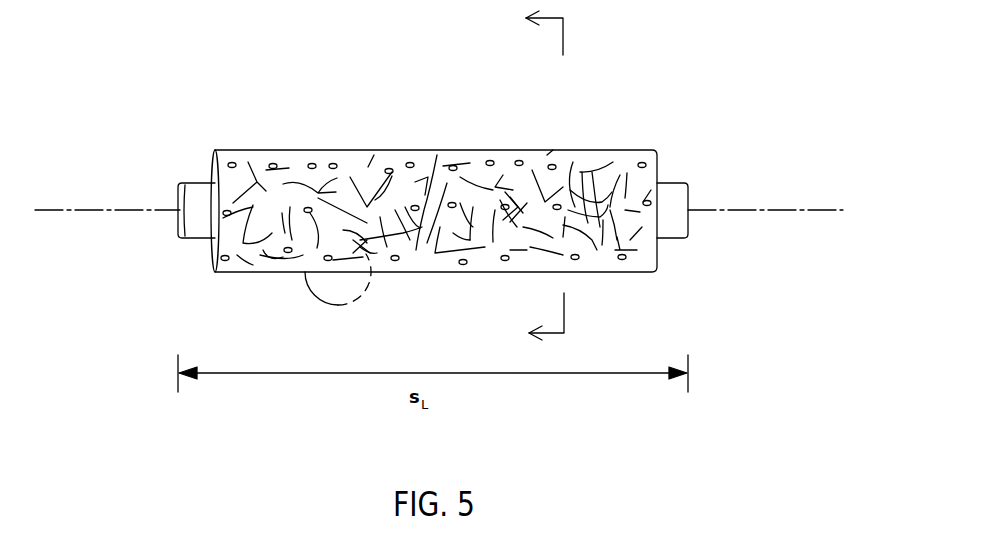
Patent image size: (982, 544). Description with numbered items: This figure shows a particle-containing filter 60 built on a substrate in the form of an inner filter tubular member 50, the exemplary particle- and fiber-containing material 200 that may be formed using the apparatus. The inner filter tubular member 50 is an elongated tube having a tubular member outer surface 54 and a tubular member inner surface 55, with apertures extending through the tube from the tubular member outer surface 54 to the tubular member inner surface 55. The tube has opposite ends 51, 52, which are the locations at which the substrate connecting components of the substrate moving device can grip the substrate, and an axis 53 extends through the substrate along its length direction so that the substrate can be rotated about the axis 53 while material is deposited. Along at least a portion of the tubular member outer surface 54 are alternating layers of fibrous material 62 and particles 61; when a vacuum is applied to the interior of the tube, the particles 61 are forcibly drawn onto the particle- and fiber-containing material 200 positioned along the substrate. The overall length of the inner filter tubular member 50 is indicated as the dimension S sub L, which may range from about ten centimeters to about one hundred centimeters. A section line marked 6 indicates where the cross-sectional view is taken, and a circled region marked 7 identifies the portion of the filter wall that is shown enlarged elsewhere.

The section line 6- 6 is at (535, 175).
The detail region of FIG. 7 is at (313, 300).
The inner filter tubular member 50 is at (682, 214).
The end of substrate 51 is at (688, 197).
The end of substrate 52 is at (178, 204).
The axis 53 is at (834, 214).
The tubular member outer surface 54 is at (165, 190).
The tubular member inner surface 55 is at (178, 215).
The particle-containing filter 60 is at (453, 222).
The particles 61 is at (333, 163).
The fibrous material 62 is at (477, 172).
The particle- and fiber-containing material 200 is at (603, 160).